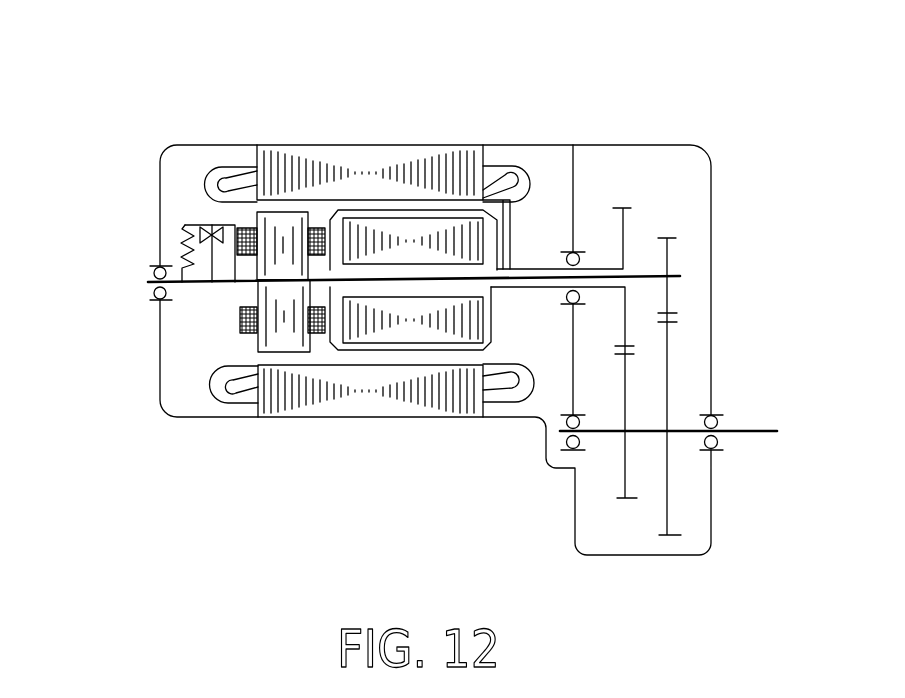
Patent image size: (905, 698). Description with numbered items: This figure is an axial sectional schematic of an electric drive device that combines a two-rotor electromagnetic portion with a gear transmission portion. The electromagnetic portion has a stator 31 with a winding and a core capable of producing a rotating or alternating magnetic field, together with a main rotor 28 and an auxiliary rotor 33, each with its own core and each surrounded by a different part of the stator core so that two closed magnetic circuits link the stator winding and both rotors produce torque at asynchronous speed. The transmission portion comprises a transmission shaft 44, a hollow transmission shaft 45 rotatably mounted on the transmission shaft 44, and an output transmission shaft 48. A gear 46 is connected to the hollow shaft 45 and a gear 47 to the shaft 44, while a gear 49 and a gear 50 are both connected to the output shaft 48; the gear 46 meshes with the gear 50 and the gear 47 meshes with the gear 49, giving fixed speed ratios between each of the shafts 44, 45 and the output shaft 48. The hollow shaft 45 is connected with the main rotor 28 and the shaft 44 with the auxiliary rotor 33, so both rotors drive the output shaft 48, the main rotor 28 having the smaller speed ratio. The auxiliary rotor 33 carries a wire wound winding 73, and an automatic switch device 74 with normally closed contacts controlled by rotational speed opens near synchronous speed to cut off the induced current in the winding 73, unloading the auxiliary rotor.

The automatic switch device 74 is at (212, 227).
The wire wound winding 73 is at (246, 230).
The auxiliary rotor 33 is at (279, 214).
The stator 31 is at (312, 158).
The main rotor 28 is at (392, 227).
The transmission shaft 44 is at (423, 277).
The transmission shaft 45 is at (508, 197).
The gear 46 is at (625, 233).
The gear 47 is at (676, 246).
The transmission shaft 48 is at (740, 432).
The gear 49 is at (673, 503).
The gear 50 is at (628, 475).